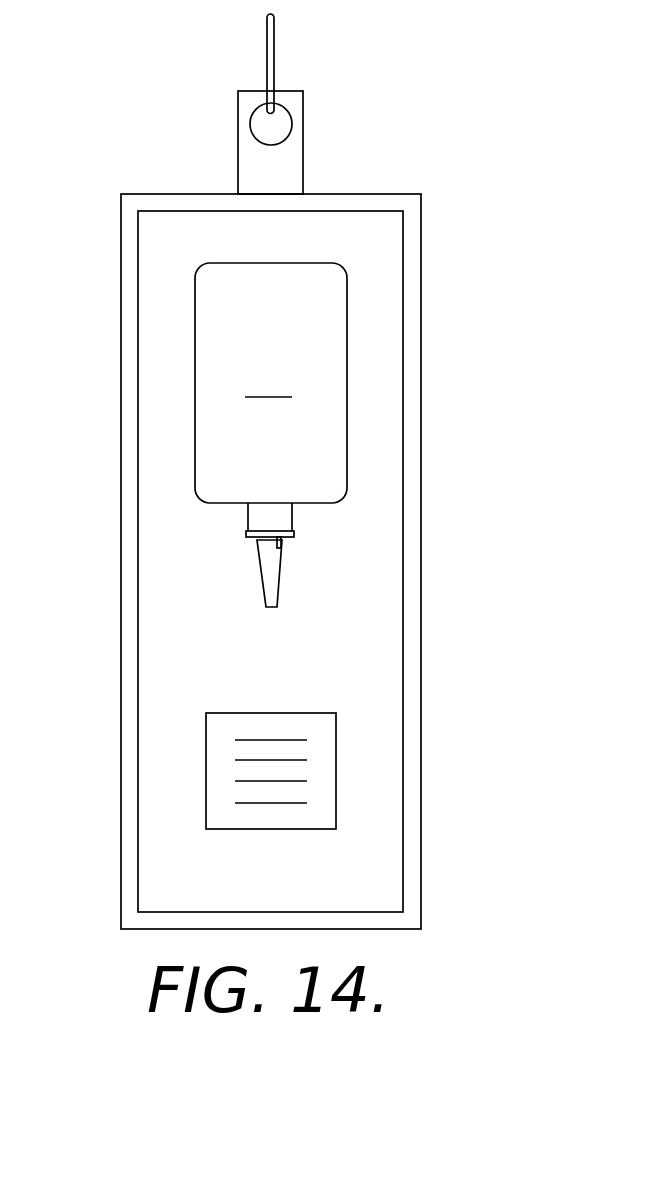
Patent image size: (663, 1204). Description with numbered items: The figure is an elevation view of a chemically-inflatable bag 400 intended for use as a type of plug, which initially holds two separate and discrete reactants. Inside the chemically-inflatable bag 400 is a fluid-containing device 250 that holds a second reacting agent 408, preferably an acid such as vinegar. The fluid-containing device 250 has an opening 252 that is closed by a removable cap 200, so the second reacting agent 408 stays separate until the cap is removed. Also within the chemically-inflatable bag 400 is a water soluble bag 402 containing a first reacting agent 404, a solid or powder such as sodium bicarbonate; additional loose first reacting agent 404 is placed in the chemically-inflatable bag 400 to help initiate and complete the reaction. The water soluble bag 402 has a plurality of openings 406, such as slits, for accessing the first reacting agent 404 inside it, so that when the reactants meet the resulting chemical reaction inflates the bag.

The chemically-inflatable bag 400 is at (480, 473).
The fluid-containing device 250 is at (197, 383).
The second reacting agent 408 is at (268, 379).
The opening 252 is at (282, 520).
The removable cap 200 is at (280, 578).
The water soluble bag 402 is at (300, 784).
The first reacting agent 404 is at (324, 828).
The plurality of openings 406 is at (253, 803).